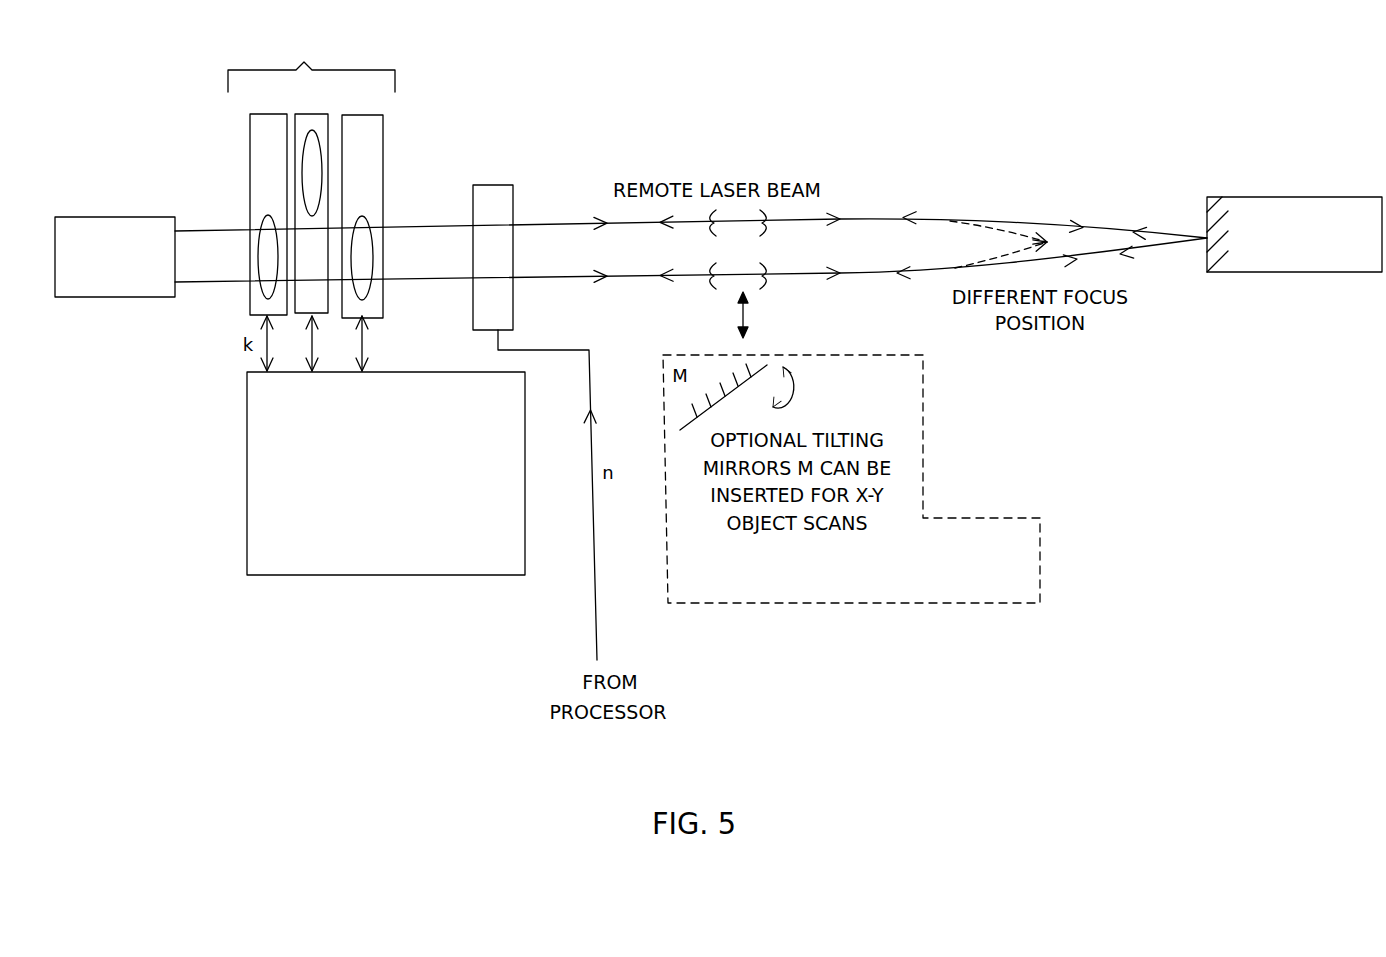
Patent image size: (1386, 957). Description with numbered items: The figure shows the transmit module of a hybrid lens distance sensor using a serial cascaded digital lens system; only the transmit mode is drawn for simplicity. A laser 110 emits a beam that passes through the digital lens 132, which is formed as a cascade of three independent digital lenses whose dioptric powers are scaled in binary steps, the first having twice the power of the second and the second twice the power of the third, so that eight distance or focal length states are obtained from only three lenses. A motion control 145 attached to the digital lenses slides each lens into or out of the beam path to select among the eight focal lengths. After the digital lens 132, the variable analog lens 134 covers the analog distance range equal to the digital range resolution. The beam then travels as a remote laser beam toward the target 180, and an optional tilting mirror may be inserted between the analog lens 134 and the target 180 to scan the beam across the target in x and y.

The laser 110 is at (124, 217).
The digital lens 132 is at (364, 70).
The analog lens 134 is at (470, 197).
The motion control 145 is at (247, 452).
The target 180 is at (1295, 197).